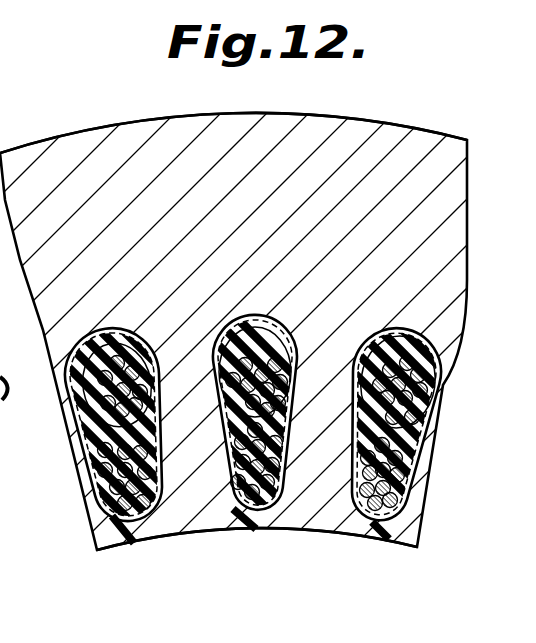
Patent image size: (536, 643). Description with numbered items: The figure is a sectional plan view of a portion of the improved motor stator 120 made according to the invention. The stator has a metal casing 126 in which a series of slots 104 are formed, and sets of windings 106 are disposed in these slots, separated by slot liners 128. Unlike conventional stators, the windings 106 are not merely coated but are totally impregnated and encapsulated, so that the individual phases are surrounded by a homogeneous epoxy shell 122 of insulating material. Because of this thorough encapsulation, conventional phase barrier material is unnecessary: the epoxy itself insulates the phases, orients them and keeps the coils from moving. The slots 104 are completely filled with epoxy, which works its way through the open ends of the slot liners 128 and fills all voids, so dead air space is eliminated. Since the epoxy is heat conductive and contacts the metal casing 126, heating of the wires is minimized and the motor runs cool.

The motor stator 120 is at (380, 123).
The metal casing 126 is at (80, 166).
The slot liners 128 is at (215, 357).
The windings 106 is at (97, 485).
The slots 104 is at (179, 534).
The epoxy shell 122 is at (368, 528).